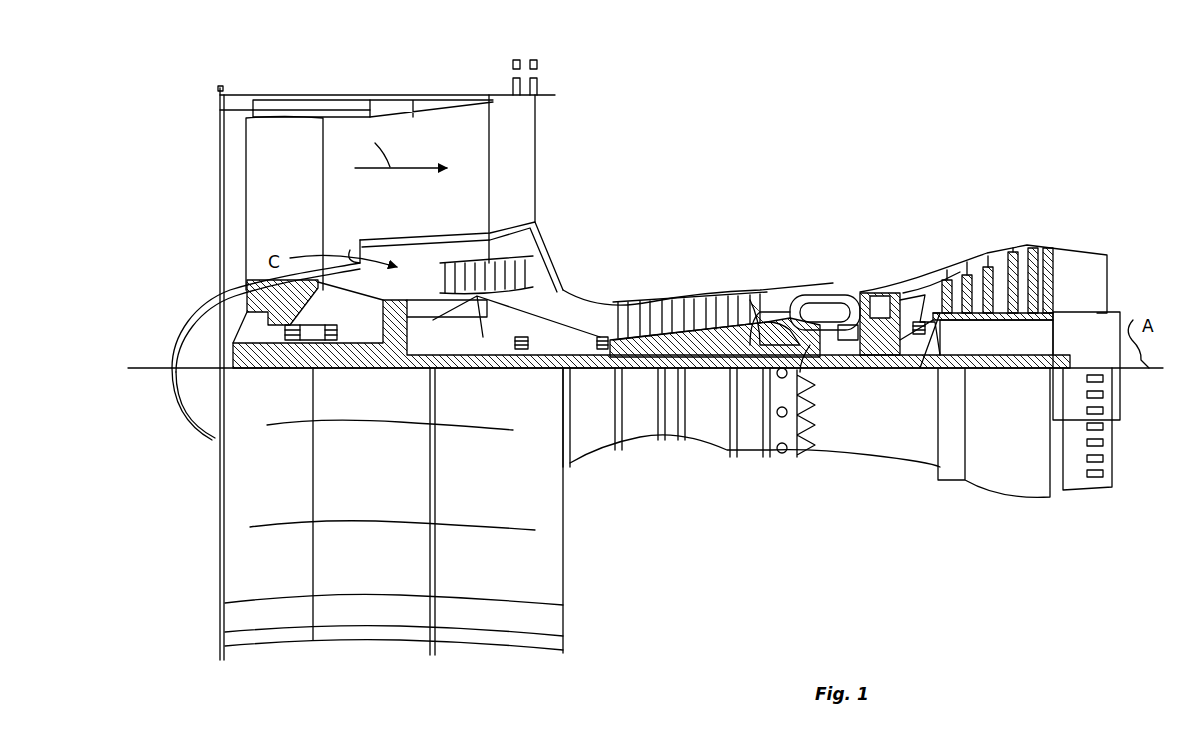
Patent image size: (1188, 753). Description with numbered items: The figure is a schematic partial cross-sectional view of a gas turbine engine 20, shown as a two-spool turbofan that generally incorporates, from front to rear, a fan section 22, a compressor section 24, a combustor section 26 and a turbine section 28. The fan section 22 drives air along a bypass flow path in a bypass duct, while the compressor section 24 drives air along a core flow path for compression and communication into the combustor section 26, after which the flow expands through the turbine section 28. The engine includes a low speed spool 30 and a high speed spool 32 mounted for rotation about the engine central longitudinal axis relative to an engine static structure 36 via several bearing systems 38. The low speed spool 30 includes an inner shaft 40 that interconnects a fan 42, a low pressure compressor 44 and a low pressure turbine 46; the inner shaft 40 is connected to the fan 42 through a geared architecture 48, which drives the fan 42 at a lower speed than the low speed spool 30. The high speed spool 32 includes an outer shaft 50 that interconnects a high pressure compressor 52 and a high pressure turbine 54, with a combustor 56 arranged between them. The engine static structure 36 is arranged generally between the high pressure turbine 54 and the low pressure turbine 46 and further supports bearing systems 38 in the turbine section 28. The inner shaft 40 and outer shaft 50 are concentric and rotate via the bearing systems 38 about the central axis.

The gas turbine engine 20 is at (846, 120).
The fan section 22 is at (415, 63).
The compressor section 24 is at (800, 206).
The combustor section 26 is at (857, 206).
The turbine section 28 is at (867, 206).
The low speed spool 30 is at (713, 380).
The high speed spool 32 is at (770, 307).
The engine static structure 36 is at (750, 465).
The bearing systems 38 is at (295, 345).
The inner shaft 40 is at (575, 372).
The fan 42 is at (277, 279).
The low pressure compressor 44 is at (500, 270).
The low pressure turbine 46 is at (998, 257).
The geared architecture 48 is at (397, 352).
The outer shaft 50 is at (833, 350).
The high pressure compressor 52 is at (685, 350).
The high pressure turbine 54 is at (880, 292).
The combustor 56 is at (818, 310).